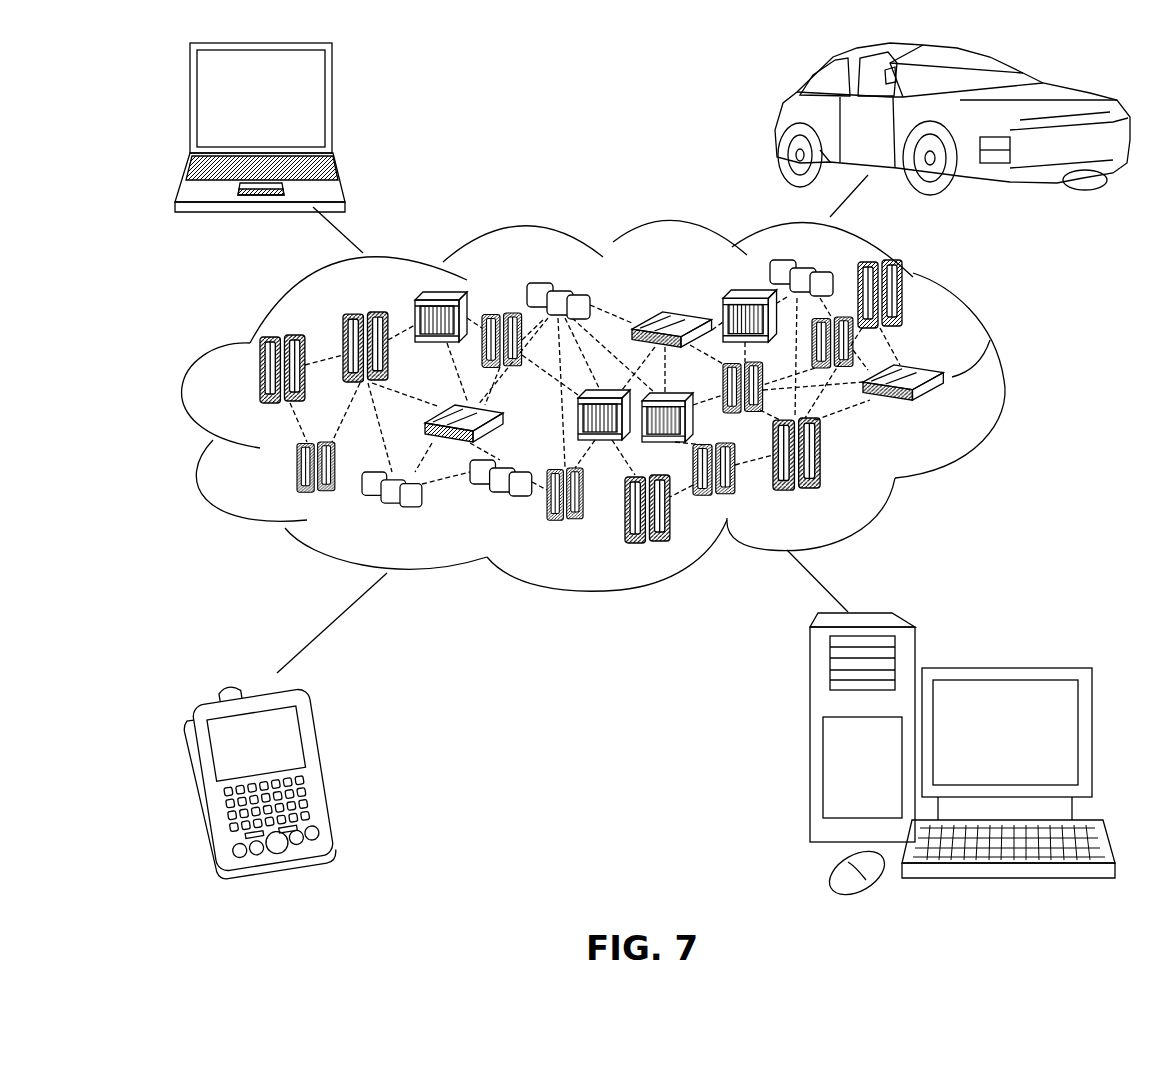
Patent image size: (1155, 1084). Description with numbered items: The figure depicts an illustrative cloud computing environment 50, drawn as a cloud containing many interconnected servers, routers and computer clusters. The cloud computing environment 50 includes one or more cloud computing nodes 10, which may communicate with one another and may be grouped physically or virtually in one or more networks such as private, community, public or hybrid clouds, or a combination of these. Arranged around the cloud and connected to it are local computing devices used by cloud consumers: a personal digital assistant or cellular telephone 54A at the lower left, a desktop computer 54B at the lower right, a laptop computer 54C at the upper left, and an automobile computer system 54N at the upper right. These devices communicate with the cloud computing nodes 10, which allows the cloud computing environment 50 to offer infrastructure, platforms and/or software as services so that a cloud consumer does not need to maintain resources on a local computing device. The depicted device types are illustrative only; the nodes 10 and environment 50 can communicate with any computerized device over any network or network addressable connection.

The cloud computing node 10 is at (955, 414).
The cloud computing environment 50 is at (1003, 380).
The personal digital assistant or cellular telephone 54A is at (320, 765).
The desktop computer 54B is at (1005, 668).
The laptop computer 54C is at (333, 104).
The automobile computer system 54N is at (780, 122).